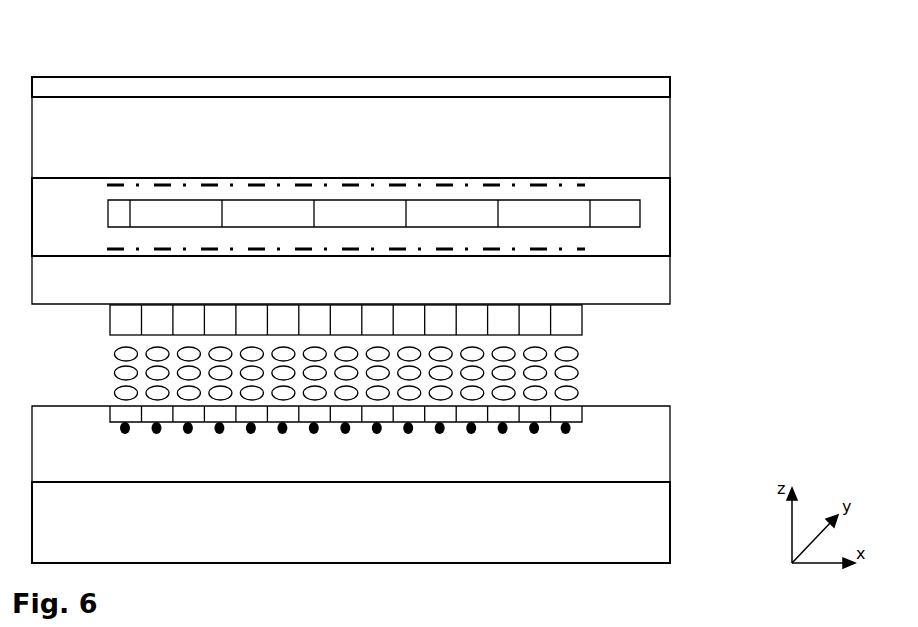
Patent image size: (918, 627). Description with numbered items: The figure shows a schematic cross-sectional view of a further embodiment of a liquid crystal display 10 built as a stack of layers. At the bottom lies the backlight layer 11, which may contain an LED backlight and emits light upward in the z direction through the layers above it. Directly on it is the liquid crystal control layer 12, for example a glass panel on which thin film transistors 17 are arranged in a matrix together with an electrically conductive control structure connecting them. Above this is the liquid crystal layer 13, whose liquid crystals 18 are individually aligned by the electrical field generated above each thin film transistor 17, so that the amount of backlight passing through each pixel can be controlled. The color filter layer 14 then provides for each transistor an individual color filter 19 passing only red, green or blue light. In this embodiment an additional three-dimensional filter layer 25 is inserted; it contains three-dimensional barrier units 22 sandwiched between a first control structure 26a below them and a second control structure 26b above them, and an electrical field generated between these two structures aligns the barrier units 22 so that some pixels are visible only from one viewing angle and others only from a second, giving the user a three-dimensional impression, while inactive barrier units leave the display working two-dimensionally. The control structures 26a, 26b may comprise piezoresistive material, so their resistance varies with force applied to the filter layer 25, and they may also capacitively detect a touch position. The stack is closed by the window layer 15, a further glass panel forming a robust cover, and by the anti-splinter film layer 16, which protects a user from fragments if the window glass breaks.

The liquid crystal display 10 is at (248, 60).
The backlight layer 11 is at (670, 520).
The liquid crystal control layer 12 is at (670, 440).
The liquid crystal layer 13 is at (668, 372).
The color filter layer 14 is at (670, 294).
The window layer 15 is at (670, 140).
The anti-splinter film layer 16 is at (670, 83).
The thin film transistors 17 is at (115, 428).
The liquid crystals 18 is at (113, 374).
The color filter 19 is at (110, 309).
The 3D barrier units 22 is at (618, 212).
The 3D filter layer 25 is at (670, 217).
The first control structure 26a is at (118, 250).
The second control structure 26b is at (110, 188).